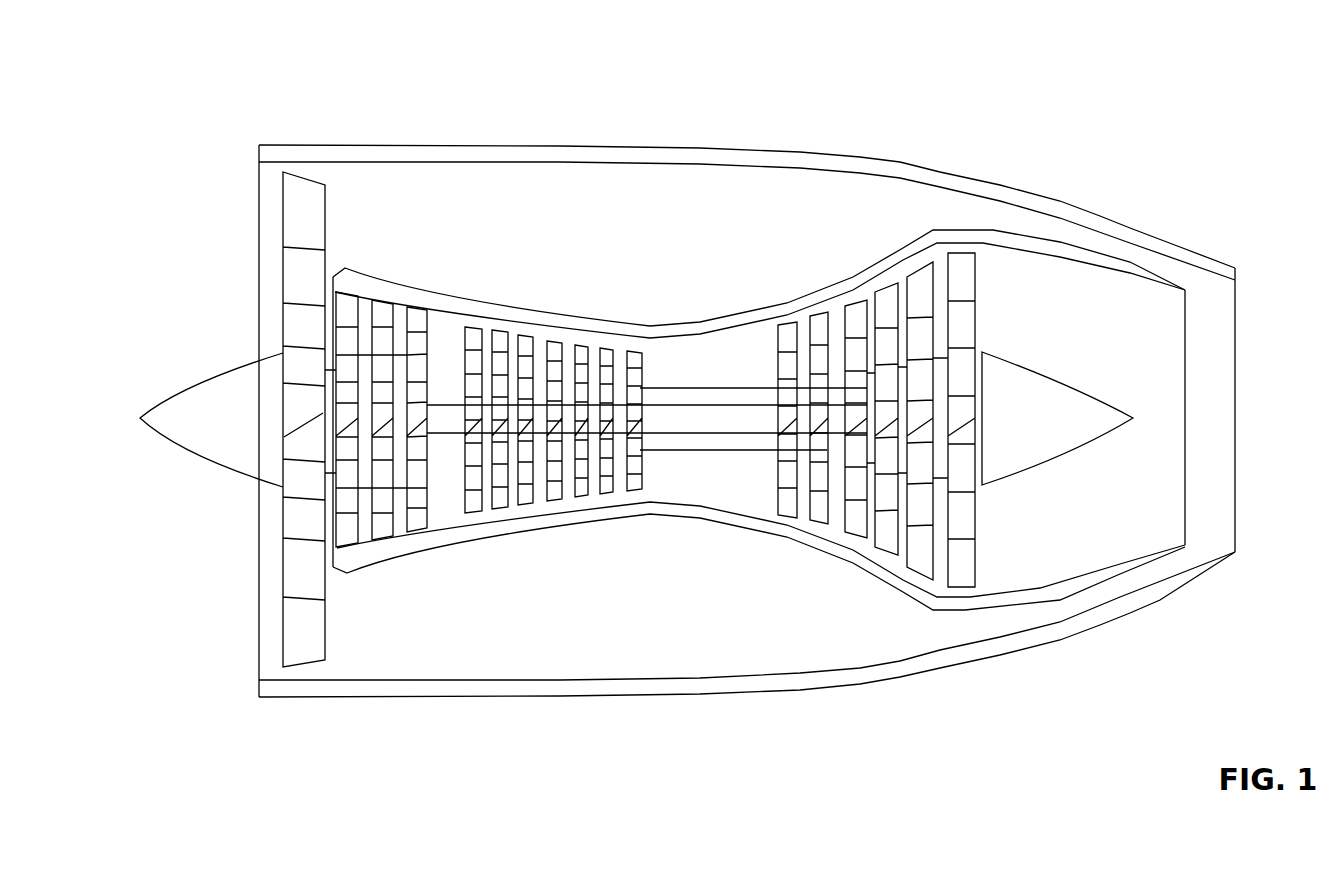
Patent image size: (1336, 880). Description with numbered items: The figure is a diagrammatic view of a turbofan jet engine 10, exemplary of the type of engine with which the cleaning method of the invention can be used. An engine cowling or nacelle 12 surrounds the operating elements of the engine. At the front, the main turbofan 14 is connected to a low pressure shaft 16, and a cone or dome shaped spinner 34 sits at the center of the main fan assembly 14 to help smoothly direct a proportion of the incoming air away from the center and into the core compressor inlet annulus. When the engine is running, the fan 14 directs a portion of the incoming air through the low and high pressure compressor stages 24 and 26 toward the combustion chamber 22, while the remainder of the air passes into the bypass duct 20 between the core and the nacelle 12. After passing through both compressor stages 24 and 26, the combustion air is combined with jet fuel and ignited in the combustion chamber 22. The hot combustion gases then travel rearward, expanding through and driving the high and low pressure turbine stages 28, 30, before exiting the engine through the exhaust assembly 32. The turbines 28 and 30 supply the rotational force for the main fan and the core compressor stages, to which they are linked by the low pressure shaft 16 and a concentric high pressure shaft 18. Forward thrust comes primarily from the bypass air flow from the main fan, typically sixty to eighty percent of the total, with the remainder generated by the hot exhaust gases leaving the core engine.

The turbofan jet engine 10 is at (577, 137).
The engine cowling or nacelle 12 is at (752, 158).
The main turbofan 14 is at (302, 212).
The low pressure shaft 16 is at (445, 420).
The high pressure shaft 18 is at (673, 440).
The bypass duct 20 is at (615, 222).
The combustion chamber 22 is at (710, 360).
The low pressure compressor stage 24 is at (382, 313).
The high pressure compressor stage 26 is at (526, 338).
The high pressure turbine stage 28 is at (820, 330).
The low pressure turbine stage 30 is at (920, 283).
The exhaust assembly 32 is at (1148, 353).
The spinner 34 is at (223, 432).